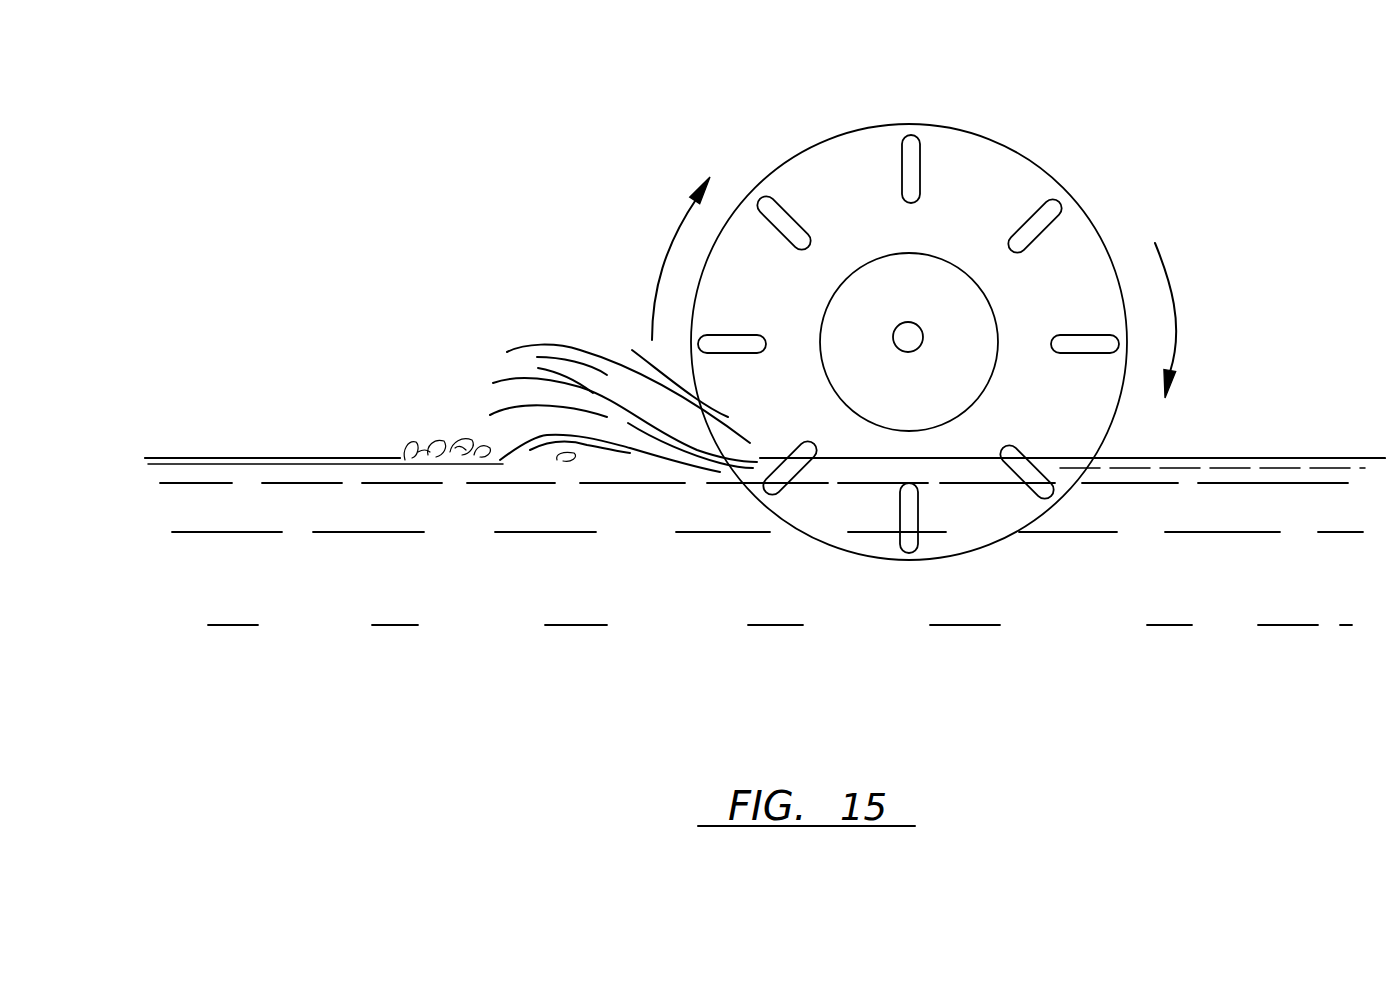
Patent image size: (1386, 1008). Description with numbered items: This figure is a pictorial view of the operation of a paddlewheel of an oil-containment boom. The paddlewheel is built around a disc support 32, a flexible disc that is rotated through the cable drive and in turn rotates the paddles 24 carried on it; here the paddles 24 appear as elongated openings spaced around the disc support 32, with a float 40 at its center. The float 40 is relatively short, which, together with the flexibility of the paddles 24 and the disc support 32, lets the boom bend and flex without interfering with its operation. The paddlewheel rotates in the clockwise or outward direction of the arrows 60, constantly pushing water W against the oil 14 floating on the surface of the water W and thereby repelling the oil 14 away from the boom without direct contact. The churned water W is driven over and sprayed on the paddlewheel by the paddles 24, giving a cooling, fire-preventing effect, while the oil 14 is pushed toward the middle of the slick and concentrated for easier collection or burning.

The oil 14 is at (272, 452).
The paddles 24 is at (788, 214).
The disc supports 32 is at (830, 138).
The floats 40 is at (923, 400).
The arrows 60 is at (665, 253).
The water W is at (1277, 458).